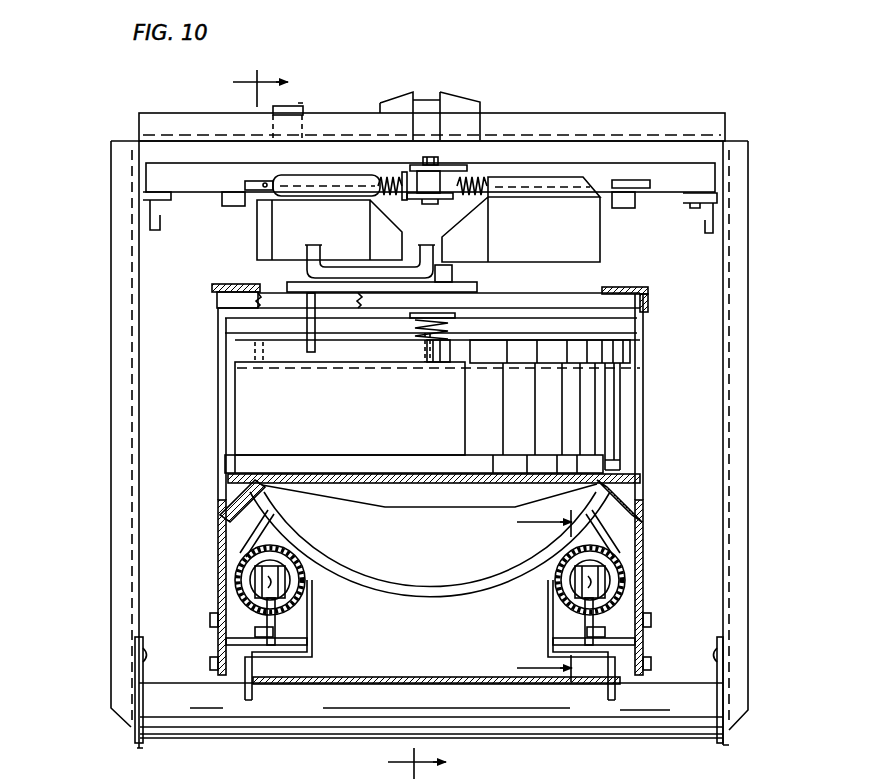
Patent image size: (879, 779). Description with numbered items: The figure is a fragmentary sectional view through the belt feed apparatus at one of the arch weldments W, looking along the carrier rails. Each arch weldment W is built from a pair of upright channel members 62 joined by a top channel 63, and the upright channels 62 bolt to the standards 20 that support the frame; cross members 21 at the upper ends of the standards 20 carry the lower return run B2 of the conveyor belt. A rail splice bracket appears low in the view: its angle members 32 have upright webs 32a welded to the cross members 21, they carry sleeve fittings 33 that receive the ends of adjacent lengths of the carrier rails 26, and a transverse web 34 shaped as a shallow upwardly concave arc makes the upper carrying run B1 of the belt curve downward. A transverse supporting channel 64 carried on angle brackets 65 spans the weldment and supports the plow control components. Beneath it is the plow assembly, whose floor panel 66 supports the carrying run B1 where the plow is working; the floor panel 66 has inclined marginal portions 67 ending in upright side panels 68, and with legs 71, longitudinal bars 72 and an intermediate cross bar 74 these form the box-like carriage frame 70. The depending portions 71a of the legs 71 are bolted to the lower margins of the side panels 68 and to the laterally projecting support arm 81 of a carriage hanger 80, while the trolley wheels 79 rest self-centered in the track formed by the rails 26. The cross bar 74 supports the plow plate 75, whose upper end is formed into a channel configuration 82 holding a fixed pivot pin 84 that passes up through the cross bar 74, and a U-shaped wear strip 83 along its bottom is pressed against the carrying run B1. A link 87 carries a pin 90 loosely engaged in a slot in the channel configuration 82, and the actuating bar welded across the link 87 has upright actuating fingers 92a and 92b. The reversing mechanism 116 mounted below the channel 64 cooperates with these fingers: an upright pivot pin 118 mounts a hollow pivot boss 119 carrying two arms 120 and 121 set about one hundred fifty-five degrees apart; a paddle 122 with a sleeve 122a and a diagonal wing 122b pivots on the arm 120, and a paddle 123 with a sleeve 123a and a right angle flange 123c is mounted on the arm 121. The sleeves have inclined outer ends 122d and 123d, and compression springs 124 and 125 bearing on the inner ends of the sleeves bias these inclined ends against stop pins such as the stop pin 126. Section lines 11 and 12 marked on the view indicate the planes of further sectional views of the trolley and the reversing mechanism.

The arch weldment W is at (102, 197).
The section line 11 is at (533, 596).
The section line 12 is at (324, 424).
The standards 20 is at (137, 745).
The cross members 21 is at (682, 724).
The carrier rails 26 is at (278, 567).
The angle members 32 is at (312, 628).
The upright webs 32a is at (253, 696).
The fittings 33 is at (236, 585).
The transverse web 34 is at (427, 585).
The upright channel members 62 is at (110, 397).
The top channel 63 is at (586, 80).
The transverse supporting channel 64 is at (163, 165).
The angle brackets 65 is at (165, 213).
The floor panel 66 is at (400, 492).
The inclined marginal portions 67 is at (253, 490).
The upright side panels 68 is at (222, 553).
The box-like carriage frame 70 is at (661, 340).
The legs 71 is at (220, 380).
The depending leg portions 71a is at (227, 642).
The longitudinal bars 72 is at (215, 290).
The intermediate cross bar 74 is at (549, 297).
The plow plate 75 is at (437, 408).
The trolley wheels 79 is at (303, 572).
The carriage hanger 80 is at (430, 636).
The support arm 81 is at (410, 621).
The channel configuration 82 is at (365, 348).
The U-shaped wear strip 83 is at (338, 457).
The fixed pivot pin 84 is at (410, 352).
The link 87 is at (477, 297).
The pin 90 is at (310, 300).
The upright actuating finger 92a is at (305, 270).
The upright actuating finger 92b is at (448, 216).
The plow reversing mechanism 116 is at (518, 162).
The upright pivot pin 118 is at (433, 168).
The hollow pivot boss 119 is at (477, 178).
The arm 120 is at (617, 187).
The arm 121 is at (243, 184).
The paddle 122 is at (521, 229).
The sleeve 122a is at (543, 177).
The diagonal wing 122b is at (463, 245).
The inclined outer end 122d is at (596, 180).
The paddle 123 is at (277, 193).
The sleeve 123a is at (356, 172).
The right angle flange 123c is at (263, 227).
The inclined outer end 123d is at (280, 178).
The compression spring 124 is at (470, 170).
The compression spring 125 is at (383, 165).
The stop pin 126 is at (643, 178).
The upper carrying run B1 is at (620, 486).
The lower return run B2 is at (396, 683).